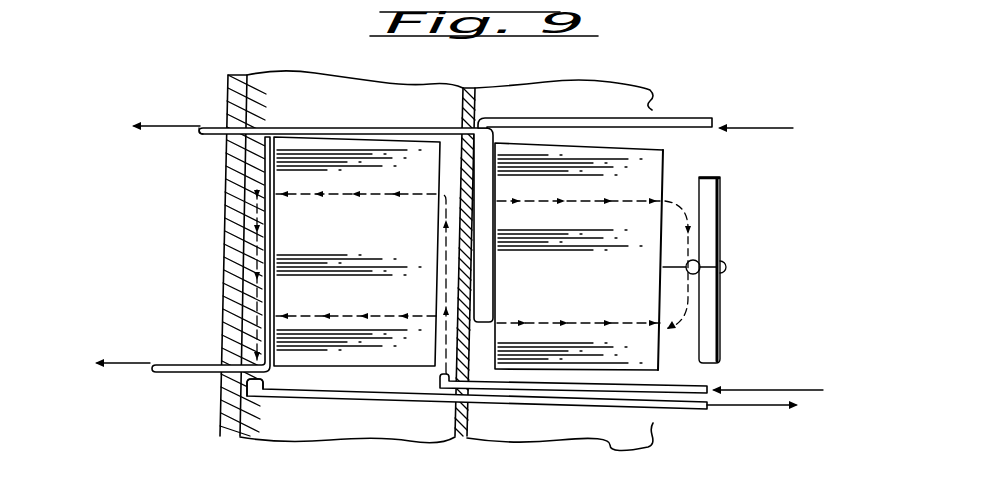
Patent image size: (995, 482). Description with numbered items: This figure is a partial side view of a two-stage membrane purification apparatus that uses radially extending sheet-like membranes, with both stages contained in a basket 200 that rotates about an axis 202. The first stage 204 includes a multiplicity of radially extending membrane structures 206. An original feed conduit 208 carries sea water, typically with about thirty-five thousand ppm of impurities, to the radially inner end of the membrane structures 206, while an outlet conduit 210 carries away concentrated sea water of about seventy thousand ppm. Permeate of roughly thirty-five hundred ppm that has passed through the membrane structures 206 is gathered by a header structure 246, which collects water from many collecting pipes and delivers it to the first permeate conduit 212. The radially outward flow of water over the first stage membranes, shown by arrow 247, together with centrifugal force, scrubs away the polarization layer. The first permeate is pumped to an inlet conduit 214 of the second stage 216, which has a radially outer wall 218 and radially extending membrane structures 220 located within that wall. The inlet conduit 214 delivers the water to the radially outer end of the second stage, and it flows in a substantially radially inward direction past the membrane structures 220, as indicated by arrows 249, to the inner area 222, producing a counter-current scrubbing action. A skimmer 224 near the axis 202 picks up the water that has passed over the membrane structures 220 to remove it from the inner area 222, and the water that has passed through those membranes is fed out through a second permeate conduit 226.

The basket 200 is at (249, 72).
The axis 202 is at (710, 153).
The first stage 204 is at (398, 50).
The membrane structures 206 is at (345, 131).
The original feed conduit 208 is at (637, 388).
The outlet conduit 210 is at (555, 398).
The first permeate conduit 212 is at (200, 344).
The inlet conduit 214 is at (680, 124).
The second stage 216 is at (607, 102).
The radially outer wall 218 is at (478, 85).
The membrane structure 220 is at (669, 170).
The inner area 222 is at (688, 357).
The skimmer 224 is at (700, 266).
The second permeate conduit 226 is at (212, 127).
The header structure 246 is at (272, 398).
The arrow 247 is at (400, 178).
The arrows 249 is at (606, 184).